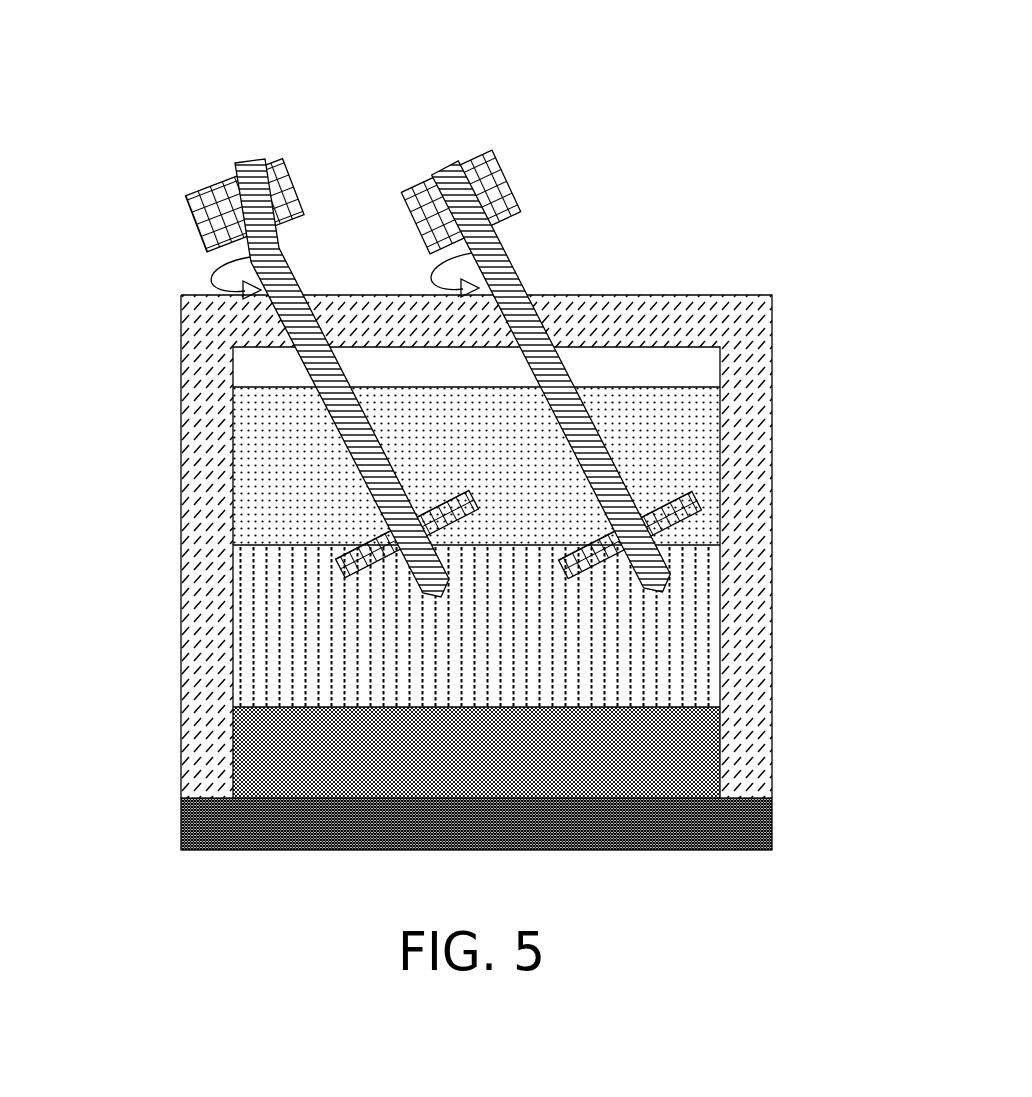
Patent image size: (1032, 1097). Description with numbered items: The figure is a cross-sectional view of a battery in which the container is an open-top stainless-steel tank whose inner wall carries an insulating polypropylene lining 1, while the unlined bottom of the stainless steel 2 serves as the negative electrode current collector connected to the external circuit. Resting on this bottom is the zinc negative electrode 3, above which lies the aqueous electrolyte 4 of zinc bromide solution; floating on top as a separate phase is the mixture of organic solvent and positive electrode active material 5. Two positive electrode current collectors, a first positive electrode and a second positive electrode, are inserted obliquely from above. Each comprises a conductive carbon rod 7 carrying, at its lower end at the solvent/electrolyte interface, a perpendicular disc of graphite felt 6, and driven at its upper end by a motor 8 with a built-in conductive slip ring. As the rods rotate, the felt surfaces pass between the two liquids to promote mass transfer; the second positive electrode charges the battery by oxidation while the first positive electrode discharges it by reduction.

The polypropylene lining 1 is at (476, 546).
The bottom of the stainless steel 2 is at (883, 787).
The zinc negative electrode 3 is at (476, 752).
The aqueous electrolyte 4 is at (476, 626).
The mixture of organic solvent and positive electrode active material 5 is at (476, 466).
The graphite felt 6 is at (457, 505).
The carbon rod 7 is at (279, 262).
The motor 8 is at (264, 158).